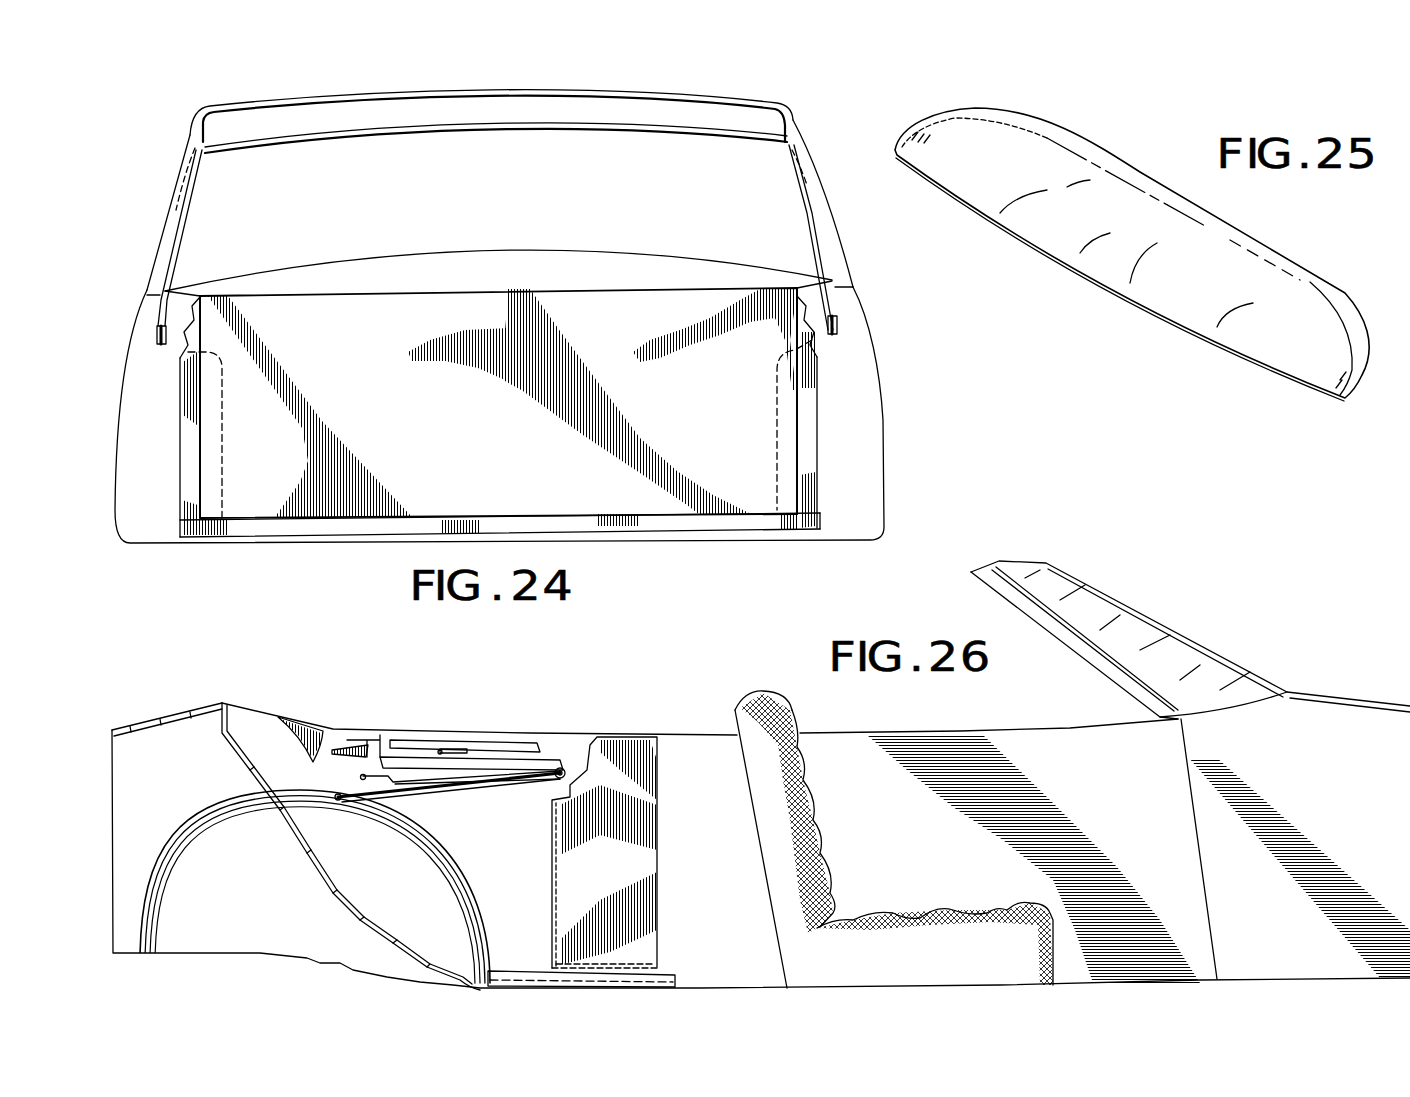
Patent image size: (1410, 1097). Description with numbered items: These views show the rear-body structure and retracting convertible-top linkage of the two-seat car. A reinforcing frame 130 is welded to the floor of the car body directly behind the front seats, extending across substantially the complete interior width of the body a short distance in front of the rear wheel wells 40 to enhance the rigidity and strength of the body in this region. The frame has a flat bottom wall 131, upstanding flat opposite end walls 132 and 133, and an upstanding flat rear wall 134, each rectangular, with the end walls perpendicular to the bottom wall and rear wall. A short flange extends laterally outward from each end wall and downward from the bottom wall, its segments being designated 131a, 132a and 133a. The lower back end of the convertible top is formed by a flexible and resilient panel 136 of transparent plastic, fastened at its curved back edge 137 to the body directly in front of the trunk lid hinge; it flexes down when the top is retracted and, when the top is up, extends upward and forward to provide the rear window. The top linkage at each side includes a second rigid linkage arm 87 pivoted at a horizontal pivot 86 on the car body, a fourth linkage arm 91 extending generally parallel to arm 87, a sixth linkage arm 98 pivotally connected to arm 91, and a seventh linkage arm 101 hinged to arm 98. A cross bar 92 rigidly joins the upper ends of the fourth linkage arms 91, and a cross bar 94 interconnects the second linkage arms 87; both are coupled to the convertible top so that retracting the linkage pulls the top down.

In FIG. 24, the rear wheel wells 40 is at (236, 401).
In FIG. 26, the rear wheel wells 40 is at (380, 890).
In FIG. 24, the pivot 86 is at (157, 334).
In FIG. 26, the pivot 86 is at (566, 778).
In FIG. 24, the second rigid linkage arm 87 is at (180, 250).
In FIG. 26, the second rigid linkage arm 87 is at (504, 785).
In FIG. 24, the fourth linkage arm 91 is at (163, 232).
In FIG. 26, the fourth linkage arm 91 is at (413, 777).
In FIG. 24, the cross bar 92 is at (346, 100).
In FIG. 26, the cross bar 92 is at (360, 777).
In FIG. 24, the cross bar 94 is at (545, 128).
In FIG. 26, the cross bar 94 is at (341, 803).
In FIG. 26, the sixth linkage arm 98 is at (418, 760).
In FIG. 26, the seventh linkage arm 101 is at (485, 742).
In FIG. 24, the reinforcing frame 130 is at (608, 247).
In FIG. 26, the reinforcing frame 130 is at (495, 826).
In FIG. 24, the flat bottom wall 131 is at (440, 515).
In FIG. 26, the flat bottom wall 131 is at (590, 968).
In FIG. 24, the flange segment 131a is at (336, 527).
In FIG. 26, the flange segment 131a is at (662, 978).
In FIG. 24, the end wall 132 is at (202, 455).
In FIG. 24, the flange segment 132a is at (188, 420).
In FIG. 24, the end wall 133 is at (795, 400).
In FIG. 24, the flange segment 133a is at (808, 424).
In FIG. 24, the rear wall 134 is at (405, 301).
In FIG. 26, the rear wall 134 is at (556, 861).
In FIG. 25, the flexible and resilient panel 136 is at (1112, 291).
In FIG. 26, the flexible and resilient panel 136 is at (288, 726).
In FIG. 25, the curved back edge 137 is at (1265, 245).
In FIG. 26, the curved back edge 137 is at (215, 700).